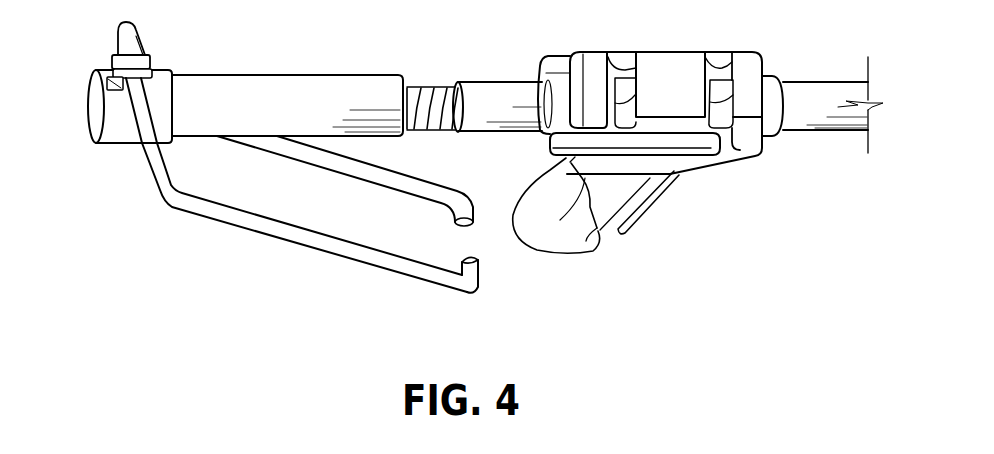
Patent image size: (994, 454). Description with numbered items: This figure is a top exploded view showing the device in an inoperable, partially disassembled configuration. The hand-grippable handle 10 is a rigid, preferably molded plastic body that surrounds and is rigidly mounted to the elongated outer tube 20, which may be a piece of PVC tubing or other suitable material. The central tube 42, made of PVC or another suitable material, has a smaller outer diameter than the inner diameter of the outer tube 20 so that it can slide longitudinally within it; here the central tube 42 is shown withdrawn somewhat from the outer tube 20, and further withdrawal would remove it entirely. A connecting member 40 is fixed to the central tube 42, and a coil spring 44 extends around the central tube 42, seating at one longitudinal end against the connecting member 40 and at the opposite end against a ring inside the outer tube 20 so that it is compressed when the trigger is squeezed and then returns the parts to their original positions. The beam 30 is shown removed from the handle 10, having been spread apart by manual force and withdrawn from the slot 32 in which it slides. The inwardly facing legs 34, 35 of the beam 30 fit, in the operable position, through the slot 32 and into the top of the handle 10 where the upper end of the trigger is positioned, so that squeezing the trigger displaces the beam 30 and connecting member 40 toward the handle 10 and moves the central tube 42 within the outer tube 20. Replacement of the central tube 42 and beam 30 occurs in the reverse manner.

The handle 10 is at (688, 93).
The outer tube 20 is at (510, 116).
The beam 30 is at (288, 235).
The slot 32 is at (693, 152).
The inwardly facing leg 34 is at (478, 263).
The inwardly facing leg 35 is at (463, 213).
The connecting member 40 is at (288, 82).
The central tube 42 is at (435, 98).
The coil spring 44 is at (415, 88).